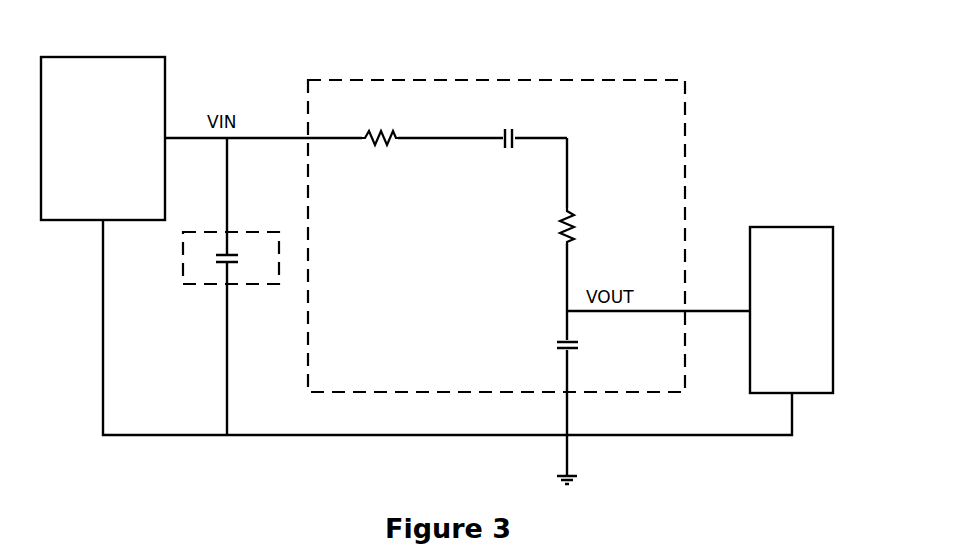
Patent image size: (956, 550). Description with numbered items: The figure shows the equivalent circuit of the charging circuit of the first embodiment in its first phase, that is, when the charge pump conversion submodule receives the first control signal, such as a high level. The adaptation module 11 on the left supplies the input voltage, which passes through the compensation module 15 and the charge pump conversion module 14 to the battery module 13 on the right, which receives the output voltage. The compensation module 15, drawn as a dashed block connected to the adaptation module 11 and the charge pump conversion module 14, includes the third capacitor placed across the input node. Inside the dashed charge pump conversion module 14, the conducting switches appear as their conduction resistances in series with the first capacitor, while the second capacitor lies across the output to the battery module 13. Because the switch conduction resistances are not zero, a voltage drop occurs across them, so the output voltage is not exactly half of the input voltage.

The adaptation module 11 is at (103, 57).
The battery module 13 is at (792, 227).
The charge pump conversion module 14 is at (686, 80).
The compensation module 15 is at (227, 232).